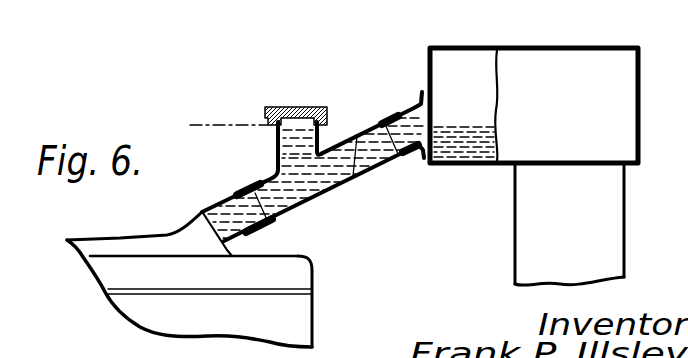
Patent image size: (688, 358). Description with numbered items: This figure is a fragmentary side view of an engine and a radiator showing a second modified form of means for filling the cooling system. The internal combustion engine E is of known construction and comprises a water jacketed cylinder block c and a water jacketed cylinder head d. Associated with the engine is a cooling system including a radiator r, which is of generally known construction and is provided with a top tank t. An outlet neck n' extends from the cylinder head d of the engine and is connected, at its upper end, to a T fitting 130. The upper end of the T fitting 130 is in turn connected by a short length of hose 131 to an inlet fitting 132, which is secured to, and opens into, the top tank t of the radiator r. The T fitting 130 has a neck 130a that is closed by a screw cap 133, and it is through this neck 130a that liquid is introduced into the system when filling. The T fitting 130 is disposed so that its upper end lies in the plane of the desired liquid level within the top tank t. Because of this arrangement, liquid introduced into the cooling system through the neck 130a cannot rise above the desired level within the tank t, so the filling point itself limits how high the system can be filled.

The top tank t is at (562, 58).
The radiator r is at (613, 205).
The cylinder head d is at (110, 275).
The cylinder block c is at (297, 308).
The internal combustion engine E is at (162, 312).
The outlet neck n' is at (224, 214).
The T fitting 130 is at (317, 197).
The neck 130a is at (280, 157).
The hose 131 is at (354, 133).
The inlet fitting 132 is at (407, 108).
The screw cap 133 is at (283, 108).